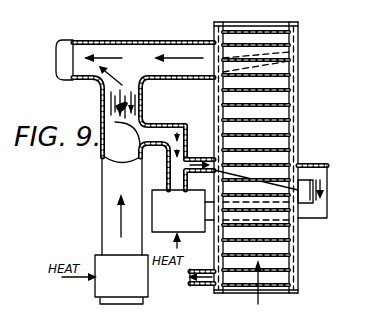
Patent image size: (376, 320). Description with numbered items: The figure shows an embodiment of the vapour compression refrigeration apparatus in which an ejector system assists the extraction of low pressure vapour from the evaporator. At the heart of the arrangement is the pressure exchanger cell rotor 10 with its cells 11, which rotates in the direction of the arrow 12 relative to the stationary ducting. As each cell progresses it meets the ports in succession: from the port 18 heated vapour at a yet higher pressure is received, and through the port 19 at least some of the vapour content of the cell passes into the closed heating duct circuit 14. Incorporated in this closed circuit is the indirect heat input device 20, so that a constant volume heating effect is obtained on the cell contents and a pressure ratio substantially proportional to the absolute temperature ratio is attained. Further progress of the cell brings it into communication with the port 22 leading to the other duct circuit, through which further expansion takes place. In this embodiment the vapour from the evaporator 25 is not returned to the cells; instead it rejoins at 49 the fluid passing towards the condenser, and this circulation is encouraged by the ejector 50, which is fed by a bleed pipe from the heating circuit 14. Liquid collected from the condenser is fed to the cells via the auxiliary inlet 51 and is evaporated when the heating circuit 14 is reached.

The pressure exchanger cell rotor 10 is at (285, 91).
The cells 11 is at (280, 109).
The direction of rotation arrow 12 is at (258, 274).
The heating duct circuit 14 is at (327, 172).
The port 18 is at (305, 166).
The port 19 is at (213, 166).
The indirect heat input device 20 is at (183, 217).
The port 22 is at (209, 62).
The evaporator 25 is at (130, 286).
The rejoining point 49 is at (123, 78).
The ejector 50 is at (112, 108).
The auxiliary inlet 51 is at (207, 286).